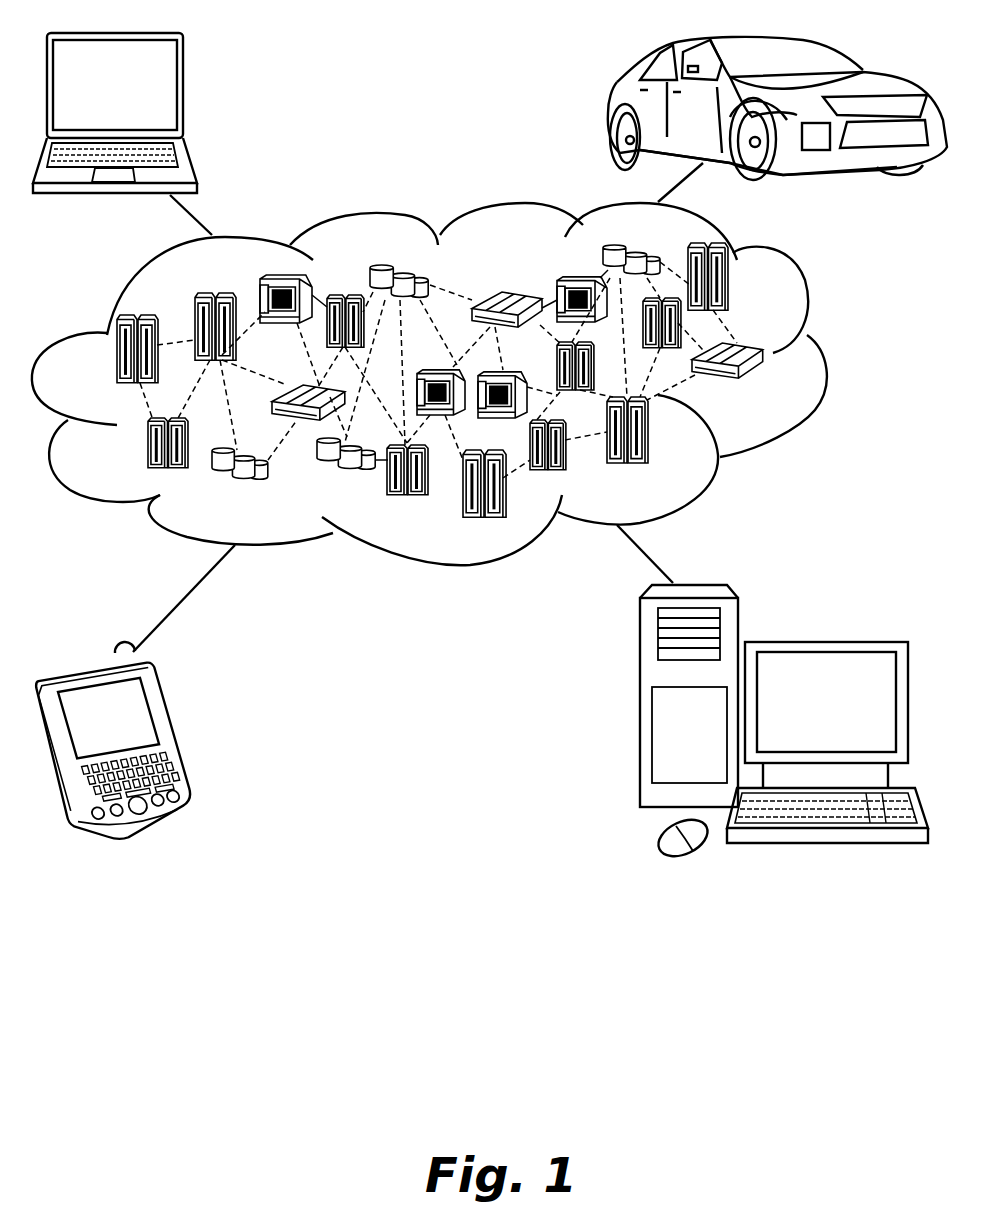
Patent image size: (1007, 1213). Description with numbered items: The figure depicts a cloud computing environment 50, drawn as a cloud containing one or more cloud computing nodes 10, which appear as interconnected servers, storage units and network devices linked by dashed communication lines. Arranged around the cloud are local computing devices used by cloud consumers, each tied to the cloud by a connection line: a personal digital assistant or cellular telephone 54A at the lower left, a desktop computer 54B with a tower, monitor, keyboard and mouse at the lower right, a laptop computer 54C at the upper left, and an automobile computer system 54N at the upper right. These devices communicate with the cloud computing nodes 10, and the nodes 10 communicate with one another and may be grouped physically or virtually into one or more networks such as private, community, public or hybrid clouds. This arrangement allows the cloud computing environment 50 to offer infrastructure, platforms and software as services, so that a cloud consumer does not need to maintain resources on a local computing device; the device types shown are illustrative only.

The cloud computing nodes 10 is at (770, 389).
The cloud computing environment 50 is at (823, 360).
The personal digital assistant or cellular telephone 54A is at (177, 735).
The desktop computer 54B is at (826, 640).
The laptop computer 54C is at (184, 92).
The automobile computer system 54N is at (611, 108).